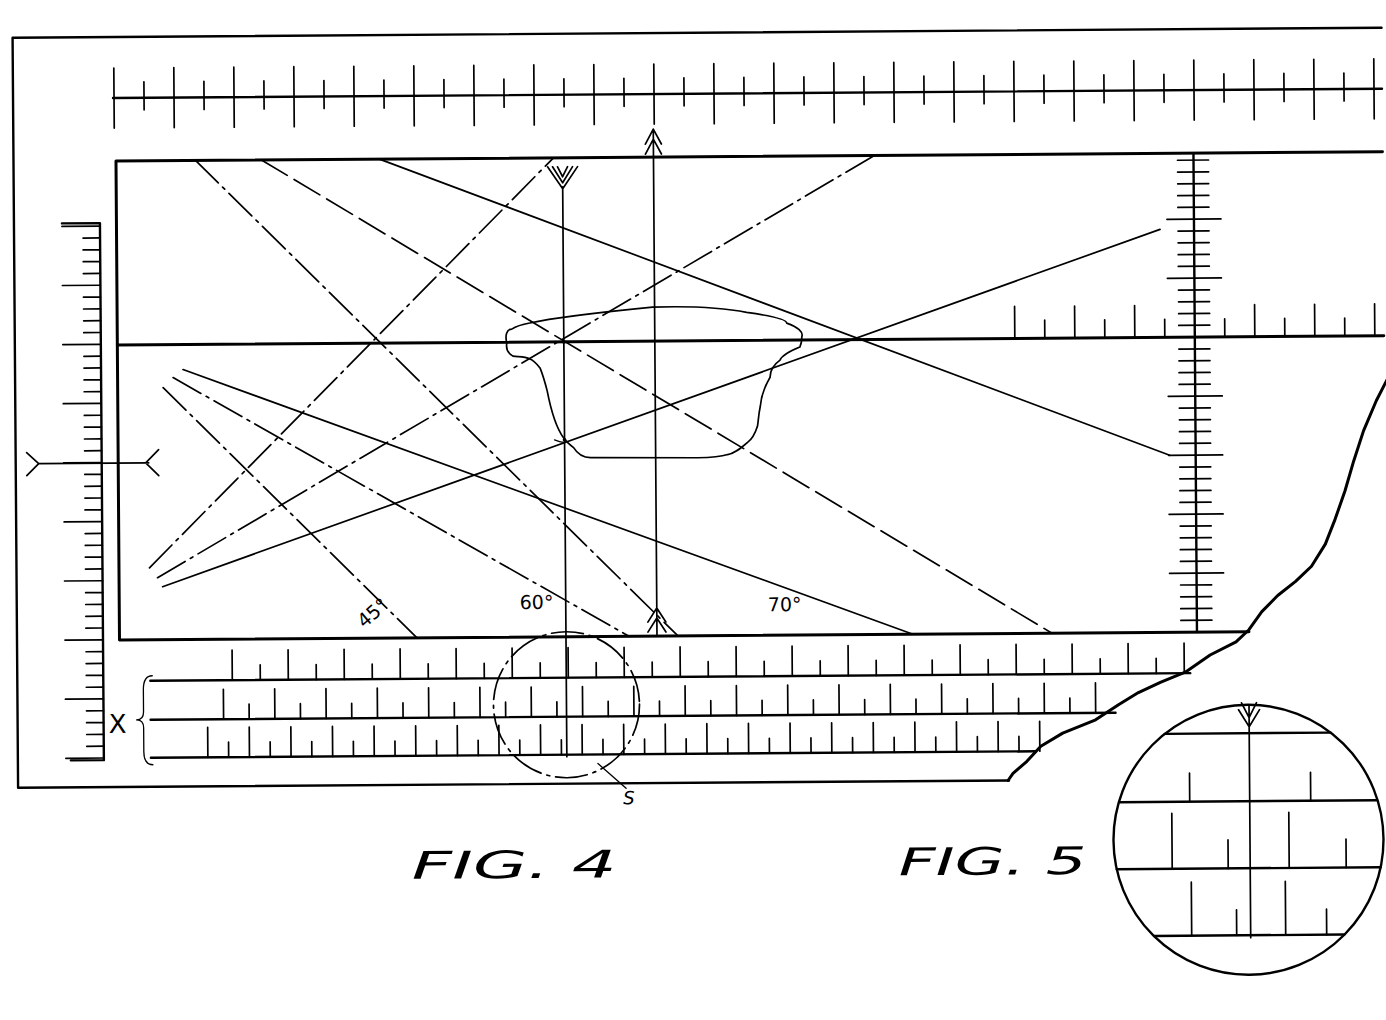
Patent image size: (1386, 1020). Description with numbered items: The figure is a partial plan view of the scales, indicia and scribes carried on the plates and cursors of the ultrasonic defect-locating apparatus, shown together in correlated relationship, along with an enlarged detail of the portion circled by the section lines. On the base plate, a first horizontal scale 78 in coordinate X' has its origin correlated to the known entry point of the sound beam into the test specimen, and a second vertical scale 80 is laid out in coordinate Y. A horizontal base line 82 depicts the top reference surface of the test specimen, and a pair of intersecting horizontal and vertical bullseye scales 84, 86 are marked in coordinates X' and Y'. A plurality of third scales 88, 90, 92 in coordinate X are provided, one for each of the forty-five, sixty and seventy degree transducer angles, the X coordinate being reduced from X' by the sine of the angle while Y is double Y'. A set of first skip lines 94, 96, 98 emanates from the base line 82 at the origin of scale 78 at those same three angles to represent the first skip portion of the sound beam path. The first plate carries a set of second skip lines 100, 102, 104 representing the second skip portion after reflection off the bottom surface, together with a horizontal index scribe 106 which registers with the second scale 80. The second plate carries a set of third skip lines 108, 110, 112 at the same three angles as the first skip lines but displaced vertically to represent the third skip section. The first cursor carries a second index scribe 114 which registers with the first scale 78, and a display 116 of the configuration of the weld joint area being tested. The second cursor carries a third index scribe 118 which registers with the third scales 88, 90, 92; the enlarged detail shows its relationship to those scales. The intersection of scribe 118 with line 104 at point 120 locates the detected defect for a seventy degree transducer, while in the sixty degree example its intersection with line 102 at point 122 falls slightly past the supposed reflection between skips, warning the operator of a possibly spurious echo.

In FIG. 4, the first horizontal scale 78 is at (113, 112).
In FIG. 4, the second vertical scale 80 is at (72, 762).
In FIG. 4, the horizontal base line 82 is at (217, 344).
In FIG. 4, the horizontal bullseye scale 84 is at (1339, 347).
In FIG. 4, the vertical bullseye scale 86 is at (1200, 375).
In FIG. 4, the third scale 88 is at (237, 758).
In FIG. 5, the third scale 88 is at (1207, 943).
In FIG. 4, the third scale 90 is at (227, 720).
In FIG. 5, the third scale 90 is at (1195, 875).
In FIG. 4, the third scale 92 is at (238, 680).
In FIG. 5, the third scale 92 is at (1153, 805).
In FIG. 4, the first skip line 94 is at (358, 579).
In FIG. 4, the first skip line 96 is at (465, 547).
In FIG. 4, the first skip line 98 is at (710, 558).
In FIG. 4, the second skip line 100 is at (347, 373).
In FIG. 4, the second skip line 102 is at (428, 422).
In FIG. 4, the second skip line 104 is at (549, 445).
In FIG. 4, the horizontal index scribe 106 is at (130, 466).
In FIG. 4, the third skip line 108 is at (307, 274).
In FIG. 4, the third skip line 110 is at (377, 234).
In FIG. 4, the third skip line 112 is at (462, 176).
In FIG. 4, the second index scribe 114 is at (657, 204).
In FIG. 4, the display 116 is at (759, 401).
In FIG. 4, the third index scribe 118 is at (568, 480).
In FIG. 5, the third index scribe 118 is at (1250, 753).
In FIG. 4, the point 120 is at (592, 407).
In FIG. 4, the point 122 is at (576, 356).